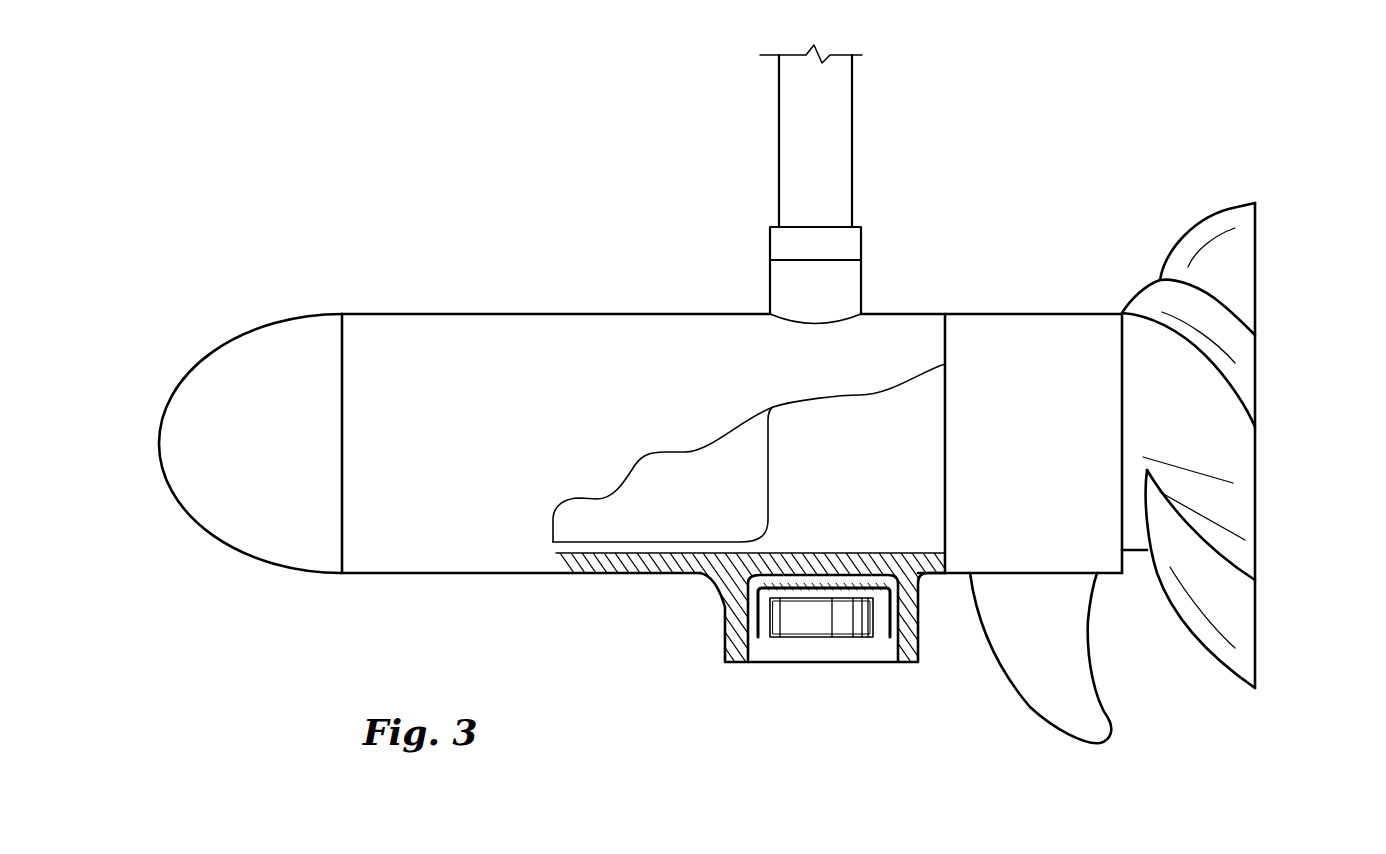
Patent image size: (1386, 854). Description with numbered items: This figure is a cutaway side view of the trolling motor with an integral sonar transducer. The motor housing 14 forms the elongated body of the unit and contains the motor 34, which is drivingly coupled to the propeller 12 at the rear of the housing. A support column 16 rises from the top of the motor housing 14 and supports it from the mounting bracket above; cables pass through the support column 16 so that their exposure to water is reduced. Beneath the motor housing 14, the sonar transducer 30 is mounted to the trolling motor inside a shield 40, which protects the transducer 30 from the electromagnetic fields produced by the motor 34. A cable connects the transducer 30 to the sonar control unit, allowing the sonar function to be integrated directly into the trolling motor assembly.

The propeller 12 is at (1247, 617).
The motor housing 14 is at (262, 323).
The support column 16 is at (788, 160).
The sonar transducer 30 is at (805, 620).
The motor 34 is at (773, 453).
The shield 40 is at (758, 637).